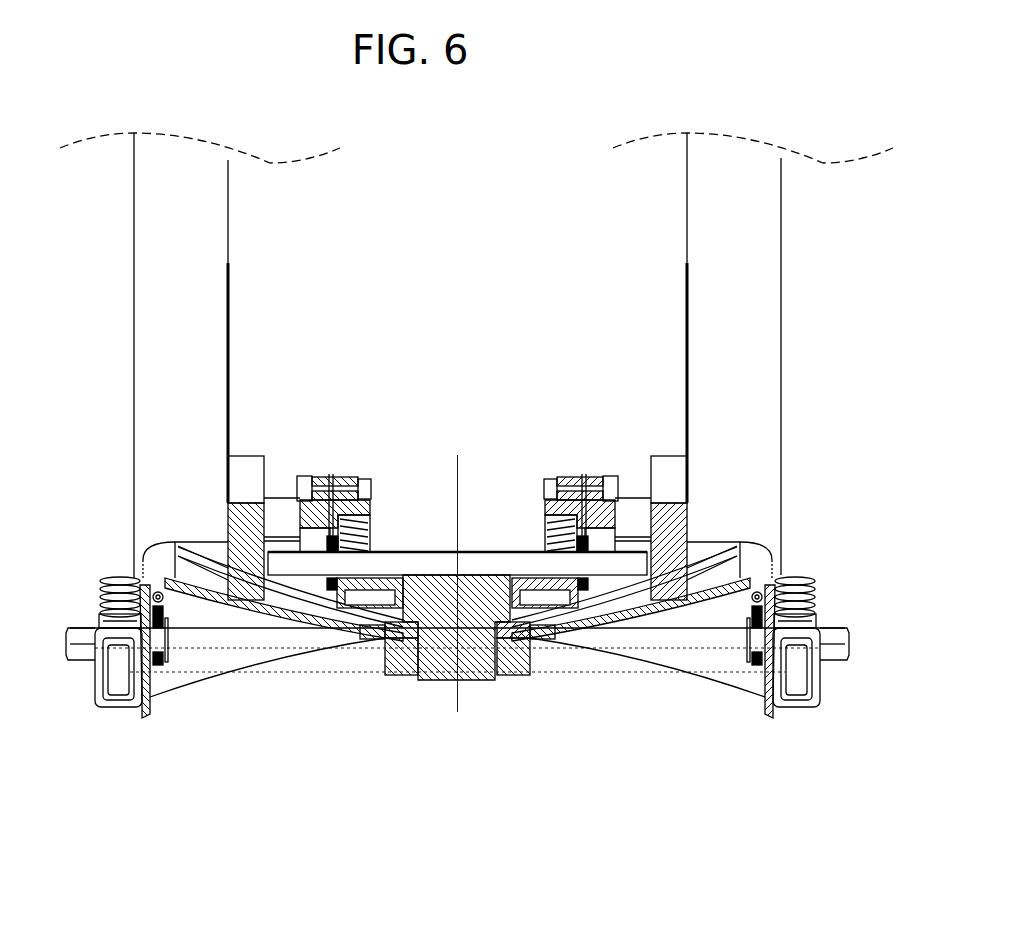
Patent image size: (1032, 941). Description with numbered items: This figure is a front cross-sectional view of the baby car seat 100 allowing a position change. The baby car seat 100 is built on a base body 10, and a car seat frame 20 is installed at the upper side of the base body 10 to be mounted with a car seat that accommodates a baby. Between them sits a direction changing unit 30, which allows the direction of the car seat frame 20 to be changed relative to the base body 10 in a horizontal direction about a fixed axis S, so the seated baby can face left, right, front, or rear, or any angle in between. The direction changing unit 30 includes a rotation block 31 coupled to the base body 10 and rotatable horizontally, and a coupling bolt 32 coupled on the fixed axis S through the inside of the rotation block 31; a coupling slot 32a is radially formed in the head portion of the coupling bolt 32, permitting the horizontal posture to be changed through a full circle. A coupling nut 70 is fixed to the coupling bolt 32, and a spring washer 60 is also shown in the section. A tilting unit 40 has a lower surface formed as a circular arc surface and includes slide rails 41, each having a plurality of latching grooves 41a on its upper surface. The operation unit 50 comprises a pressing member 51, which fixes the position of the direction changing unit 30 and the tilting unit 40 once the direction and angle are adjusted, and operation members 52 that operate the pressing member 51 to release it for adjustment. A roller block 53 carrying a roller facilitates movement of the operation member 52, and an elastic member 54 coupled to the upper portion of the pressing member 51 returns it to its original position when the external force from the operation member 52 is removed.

The baby car seat 100 is at (386, 405).
The base body 10 is at (112, 716).
The car seat frame 20 is at (160, 283).
The direction changing unit 30 is at (457, 694).
The rotation block 31 is at (573, 620).
The coupling bolt 32 is at (480, 672).
The coupling slot 32a is at (528, 582).
The tilting unit 40 is at (457, 624).
The slide rail 41 is at (245, 576).
The latching groove 41a is at (297, 575).
The operation unit 50 is at (585, 485).
The pressing member 51 is at (665, 560).
The operation member 52 is at (587, 478).
The roller block 53 is at (613, 493).
The elastic member 54 is at (605, 540).
The spring washer 60 is at (372, 640).
The coupling nut 70 is at (398, 655).
The fixed axis S is at (458, 700).